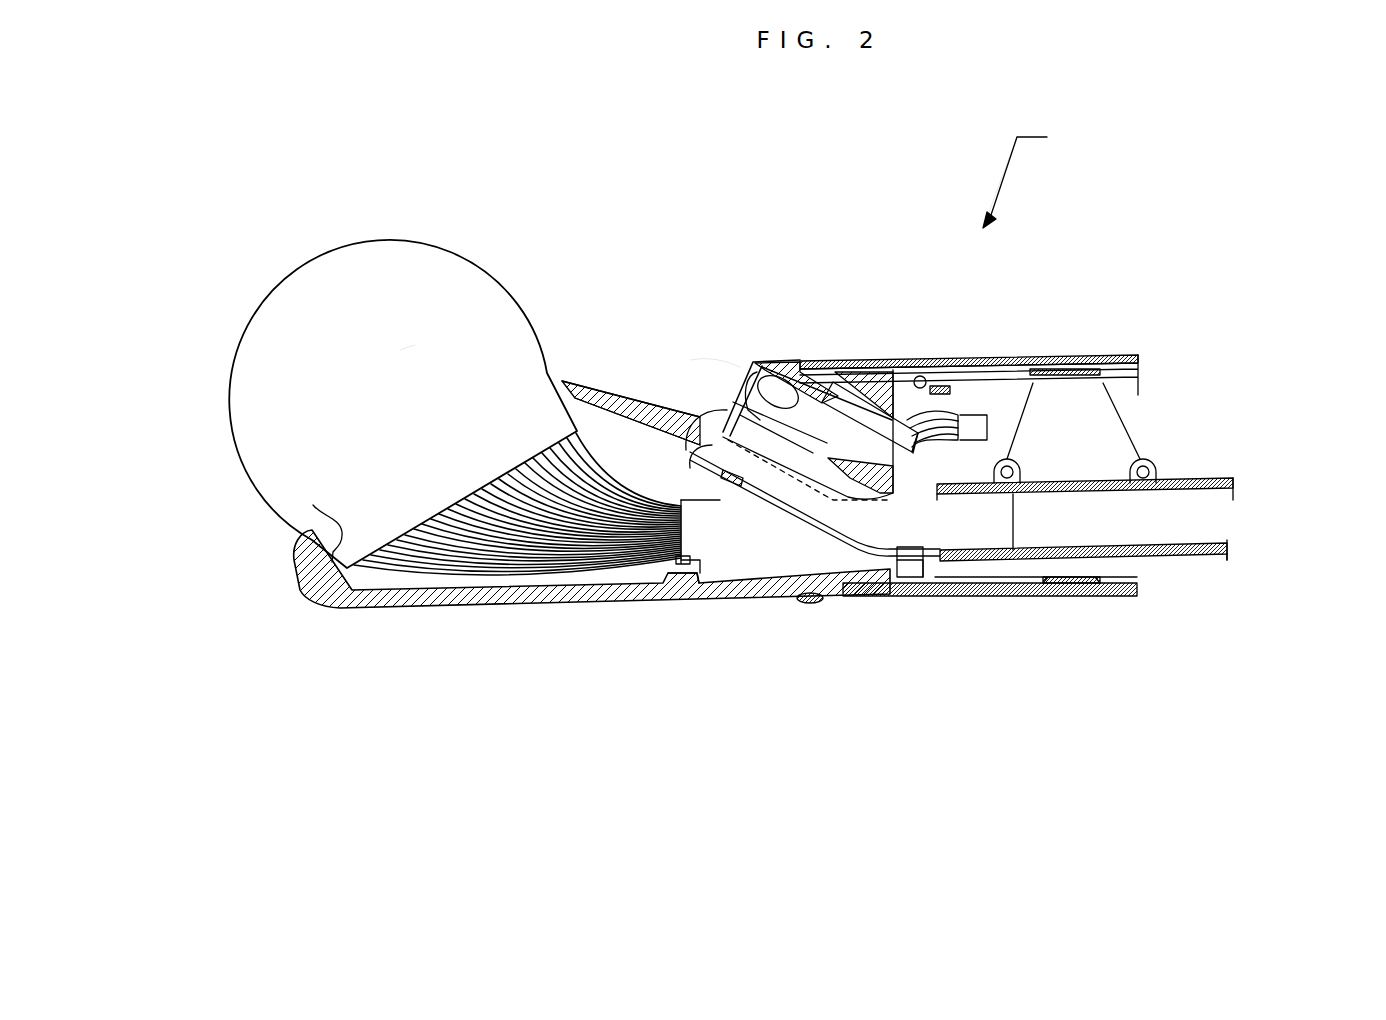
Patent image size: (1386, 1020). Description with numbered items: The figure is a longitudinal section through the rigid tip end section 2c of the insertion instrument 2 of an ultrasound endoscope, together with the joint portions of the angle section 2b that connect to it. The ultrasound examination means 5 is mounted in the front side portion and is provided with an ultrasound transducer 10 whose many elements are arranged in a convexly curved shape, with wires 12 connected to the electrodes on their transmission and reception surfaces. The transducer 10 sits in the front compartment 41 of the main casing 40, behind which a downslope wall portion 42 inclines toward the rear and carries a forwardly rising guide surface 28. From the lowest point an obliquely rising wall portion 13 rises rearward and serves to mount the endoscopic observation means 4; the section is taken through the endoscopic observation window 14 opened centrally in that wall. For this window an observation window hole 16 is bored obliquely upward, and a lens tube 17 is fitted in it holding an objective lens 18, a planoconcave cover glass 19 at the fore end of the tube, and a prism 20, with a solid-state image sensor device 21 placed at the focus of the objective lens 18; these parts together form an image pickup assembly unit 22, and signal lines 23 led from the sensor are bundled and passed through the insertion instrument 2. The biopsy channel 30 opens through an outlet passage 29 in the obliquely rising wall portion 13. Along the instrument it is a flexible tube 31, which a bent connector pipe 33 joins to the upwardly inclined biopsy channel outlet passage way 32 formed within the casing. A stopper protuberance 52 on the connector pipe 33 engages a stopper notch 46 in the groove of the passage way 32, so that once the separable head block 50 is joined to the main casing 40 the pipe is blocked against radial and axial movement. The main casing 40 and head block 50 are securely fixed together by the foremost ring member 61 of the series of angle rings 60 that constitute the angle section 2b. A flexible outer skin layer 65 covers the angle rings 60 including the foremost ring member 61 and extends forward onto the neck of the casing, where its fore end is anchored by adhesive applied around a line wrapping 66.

The insertion instrument 2 is at (1011, 169).
The angle section 2b is at (1128, 347).
The rigid tip end section 2c is at (470, 618).
The endoscopic observation means 4 is at (757, 345).
The ultrasound examination means 5 is at (407, 362).
The ultrasound transducer 10 is at (355, 422).
The wires 12 is at (595, 445).
The obliquely rising wall portion 13 is at (640, 530).
The endoscopic observation window 14 is at (745, 372).
The observation window hole 16 is at (830, 402).
The lens tube 17 is at (780, 393).
The objective lens 18 is at (786, 388).
The cover glass 19 is at (722, 383).
The prism 20 is at (905, 397).
The solid-state image sensor device 21 is at (988, 530).
The image pickup assembly unit 22 is at (930, 545).
The signal lines 23 is at (950, 385).
The forwardly rising guide surface 28 is at (662, 400).
The outlet passage 29 is at (662, 540).
The biopsy channel 30 is at (1222, 474).
The flexible tube 31 is at (1214, 556).
The biopsy channel outlet passage way 32 is at (735, 540).
The connector pipe 33 is at (868, 562).
The main casing 40 is at (497, 607).
The front compartment 41 is at (330, 527).
The downslope wall portion 42 is at (618, 392).
The stopper notch 46 is at (698, 588).
The separable head block 50 is at (868, 400).
The stopper protuberance 52 is at (712, 545).
The angle rings 60 is at (1088, 585).
The foremost ring member 61 is at (897, 562).
The flexible outer skin layer 65 is at (1113, 355).
The line wrapping 66 is at (815, 604).